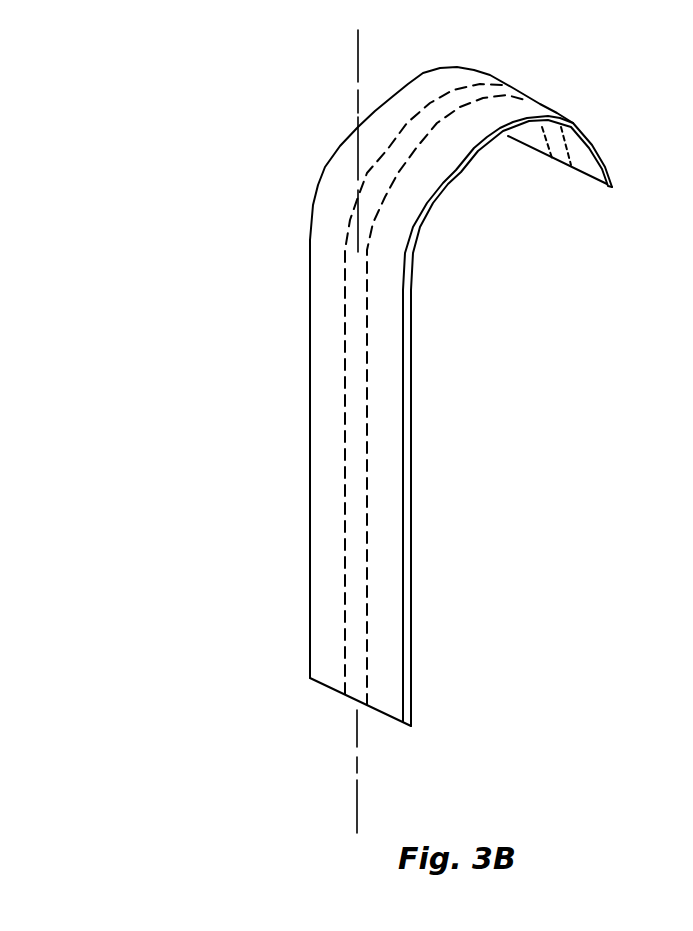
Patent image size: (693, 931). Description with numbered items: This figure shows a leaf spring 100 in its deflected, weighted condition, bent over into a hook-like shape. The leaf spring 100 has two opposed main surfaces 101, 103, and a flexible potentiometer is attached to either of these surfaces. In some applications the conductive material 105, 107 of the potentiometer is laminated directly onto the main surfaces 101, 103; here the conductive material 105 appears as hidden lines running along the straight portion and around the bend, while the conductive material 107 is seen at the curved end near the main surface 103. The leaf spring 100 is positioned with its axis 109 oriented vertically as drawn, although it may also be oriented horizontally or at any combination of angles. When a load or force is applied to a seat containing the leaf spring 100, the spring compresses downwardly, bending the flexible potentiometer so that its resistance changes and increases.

The leaf spring 100 is at (438, 431).
The main surface 101 is at (324, 353).
The main surface 103 is at (590, 170).
The conductive material 105 is at (356, 447).
The conductive material 107 is at (557, 160).
The axis 109 is at (357, 738).